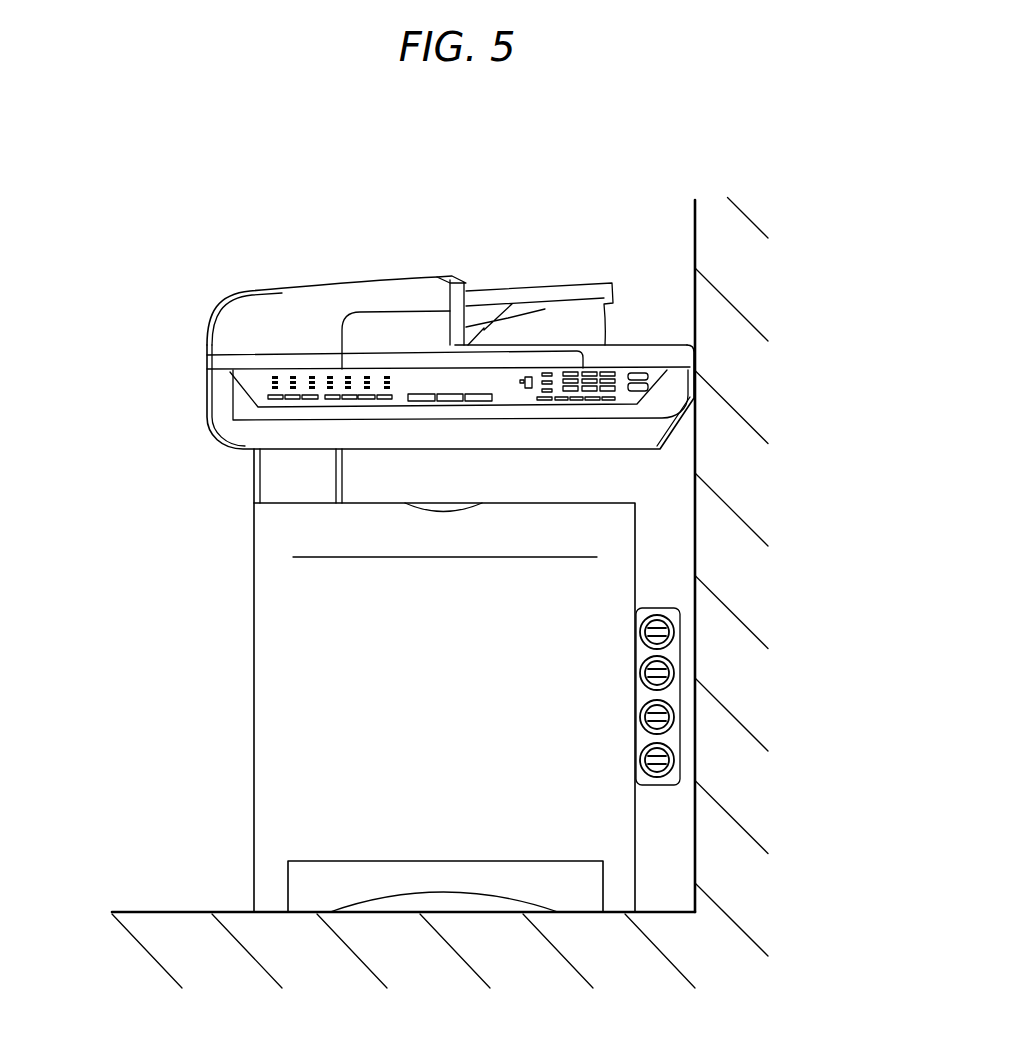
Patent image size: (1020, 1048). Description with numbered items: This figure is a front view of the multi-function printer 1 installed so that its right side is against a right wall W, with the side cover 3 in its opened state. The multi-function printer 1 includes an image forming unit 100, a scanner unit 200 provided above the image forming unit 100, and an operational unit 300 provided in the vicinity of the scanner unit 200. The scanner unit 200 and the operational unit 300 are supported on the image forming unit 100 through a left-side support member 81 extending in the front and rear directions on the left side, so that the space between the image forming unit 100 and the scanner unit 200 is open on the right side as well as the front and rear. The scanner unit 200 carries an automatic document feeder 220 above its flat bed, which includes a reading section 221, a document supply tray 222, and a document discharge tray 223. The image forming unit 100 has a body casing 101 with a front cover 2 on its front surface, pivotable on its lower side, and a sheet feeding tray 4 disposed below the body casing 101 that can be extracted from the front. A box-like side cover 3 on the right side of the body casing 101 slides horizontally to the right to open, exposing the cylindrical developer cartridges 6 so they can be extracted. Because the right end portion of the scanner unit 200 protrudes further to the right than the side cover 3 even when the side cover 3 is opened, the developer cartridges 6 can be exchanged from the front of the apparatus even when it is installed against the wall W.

The multi-function printer 1 is at (527, 208).
The right wall W is at (710, 227).
The image forming unit 100 is at (212, 557).
The body casing 101 is at (242, 636).
The front cover 2 is at (317, 693).
The side cover 3 is at (677, 608).
The sheet feeding tray 4 is at (320, 878).
The developer cartridge 6 is at (673, 663).
The left-side support member 81 is at (290, 480).
The scanner unit 200 is at (205, 300).
The automatic document feeder 220 is at (368, 272).
The reading section 221 is at (312, 295).
The document supply tray 222 is at (557, 292).
The document discharge tray 223 is at (641, 343).
The operational unit 300 is at (250, 386).